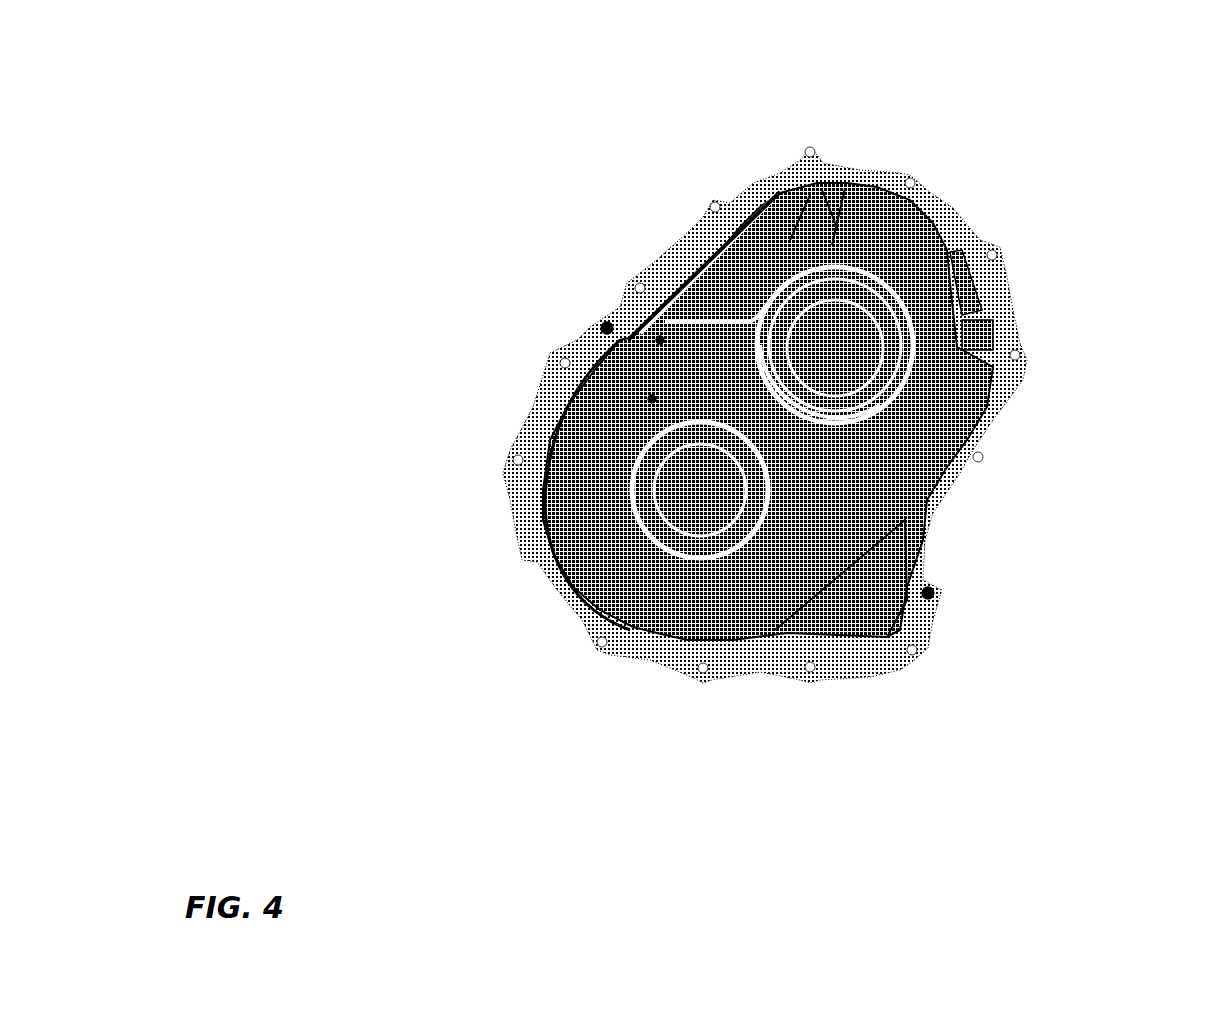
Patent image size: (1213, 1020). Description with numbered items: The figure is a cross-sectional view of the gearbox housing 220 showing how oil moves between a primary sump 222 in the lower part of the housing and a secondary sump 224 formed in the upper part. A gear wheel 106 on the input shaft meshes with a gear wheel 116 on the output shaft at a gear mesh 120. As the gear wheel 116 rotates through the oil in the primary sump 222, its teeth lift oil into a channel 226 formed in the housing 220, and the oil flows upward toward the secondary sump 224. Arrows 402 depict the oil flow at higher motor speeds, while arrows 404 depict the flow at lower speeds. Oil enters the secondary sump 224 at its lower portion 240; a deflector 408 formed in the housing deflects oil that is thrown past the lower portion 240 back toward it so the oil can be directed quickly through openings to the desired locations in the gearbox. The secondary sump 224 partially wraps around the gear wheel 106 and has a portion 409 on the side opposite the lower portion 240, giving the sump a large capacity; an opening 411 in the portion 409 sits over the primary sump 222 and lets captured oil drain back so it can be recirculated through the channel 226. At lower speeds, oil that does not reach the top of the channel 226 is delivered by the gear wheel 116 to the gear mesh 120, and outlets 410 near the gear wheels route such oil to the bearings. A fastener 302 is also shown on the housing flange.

The gear wheel 106 is at (875, 352).
The gear wheel 116 is at (598, 525).
The gear mesh 120 is at (813, 411).
The housing 220 is at (800, 160).
The primary sump 222 is at (872, 560).
The secondary sump 224 is at (885, 222).
The channel 226 is at (563, 421).
The lower portion 240 is at (745, 283).
The fastener 302 is at (725, 510).
The arrows 402 is at (775, 191).
The arrows 404 is at (658, 339).
The deflector 408 is at (838, 192).
The portion 409 is at (922, 280).
The outlets 410 is at (668, 290).
The opening 411 is at (885, 348).